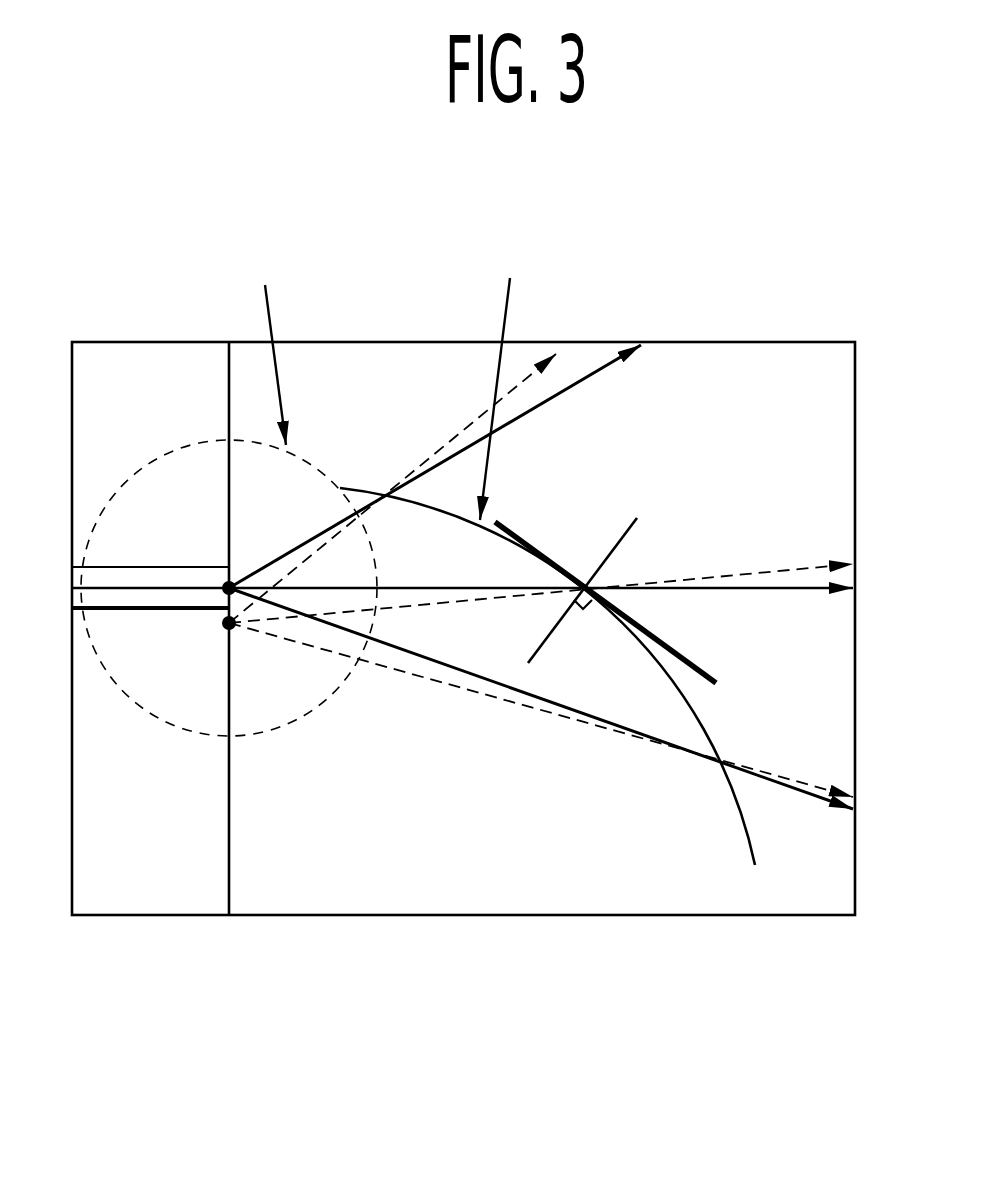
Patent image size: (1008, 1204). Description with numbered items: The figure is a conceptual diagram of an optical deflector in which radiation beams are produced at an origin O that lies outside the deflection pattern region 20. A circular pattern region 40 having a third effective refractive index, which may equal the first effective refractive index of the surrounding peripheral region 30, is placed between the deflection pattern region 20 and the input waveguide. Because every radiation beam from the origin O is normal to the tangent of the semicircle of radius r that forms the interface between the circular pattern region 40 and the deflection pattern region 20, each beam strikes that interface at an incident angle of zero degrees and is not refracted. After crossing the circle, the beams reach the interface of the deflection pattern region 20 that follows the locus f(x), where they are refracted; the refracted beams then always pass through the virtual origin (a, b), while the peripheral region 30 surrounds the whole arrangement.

The deflection pattern region 20 is at (568, 798).
The peripheral region 30 is at (787, 354).
The circular pattern region 40 is at (253, 708).